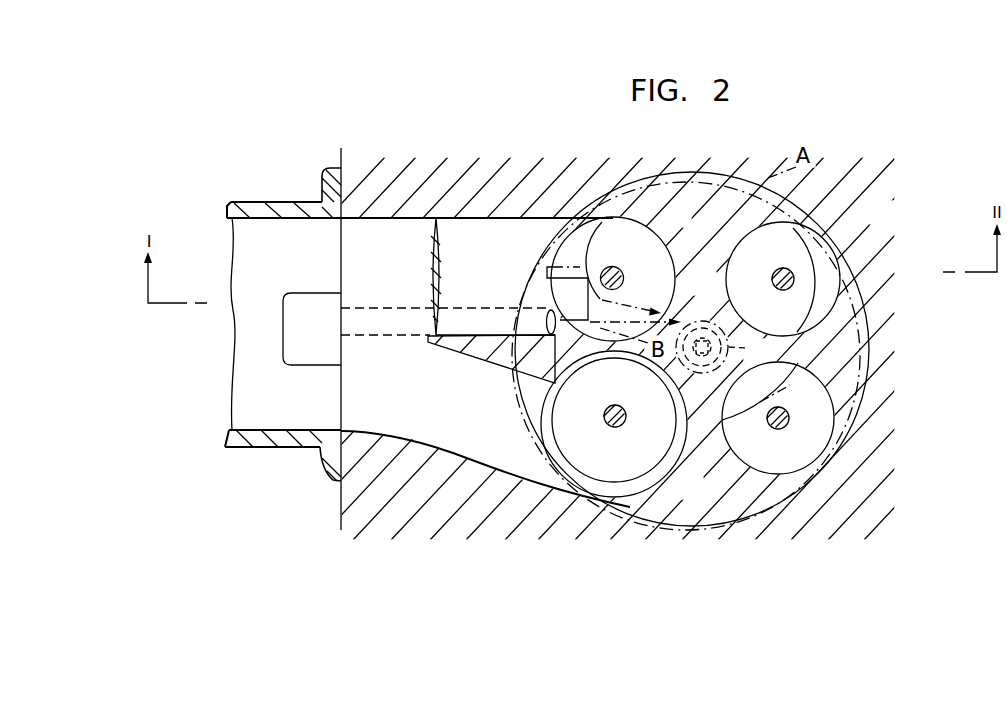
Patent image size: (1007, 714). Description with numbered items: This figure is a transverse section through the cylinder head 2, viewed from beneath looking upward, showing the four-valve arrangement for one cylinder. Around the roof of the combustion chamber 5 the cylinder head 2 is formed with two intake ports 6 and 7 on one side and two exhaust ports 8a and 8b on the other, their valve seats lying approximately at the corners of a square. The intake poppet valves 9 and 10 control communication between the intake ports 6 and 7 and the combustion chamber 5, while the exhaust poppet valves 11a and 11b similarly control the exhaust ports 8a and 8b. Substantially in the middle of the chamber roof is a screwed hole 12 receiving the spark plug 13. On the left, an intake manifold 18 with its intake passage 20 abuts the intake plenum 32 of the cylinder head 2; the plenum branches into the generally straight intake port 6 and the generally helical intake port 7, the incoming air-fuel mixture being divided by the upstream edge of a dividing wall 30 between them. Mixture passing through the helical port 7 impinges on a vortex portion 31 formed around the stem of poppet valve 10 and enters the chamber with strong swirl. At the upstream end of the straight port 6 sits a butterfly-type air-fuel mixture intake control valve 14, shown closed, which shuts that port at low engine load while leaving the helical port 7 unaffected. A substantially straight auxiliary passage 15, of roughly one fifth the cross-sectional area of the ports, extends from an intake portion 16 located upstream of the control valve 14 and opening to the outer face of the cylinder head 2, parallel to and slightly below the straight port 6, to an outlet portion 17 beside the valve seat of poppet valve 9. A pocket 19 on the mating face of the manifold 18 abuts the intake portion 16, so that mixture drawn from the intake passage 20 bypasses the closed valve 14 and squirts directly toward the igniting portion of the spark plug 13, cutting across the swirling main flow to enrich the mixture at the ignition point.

The cylinder head 2 is at (343, 163).
The combustion chamber 5 is at (872, 375).
The generally straight intake port 6 is at (503, 240).
The generally helical intake port 7 is at (487, 440).
The exhaust port 8a is at (822, 272).
The exhaust port 8b is at (815, 426).
The intake poppet valve 9 is at (616, 268).
The intake poppet valve 10 is at (621, 424).
The exhaust poppet valve 11a is at (785, 268).
The exhaust poppet valve 11b is at (786, 426).
The screwed hole 12 is at (702, 330).
The spark plug 13 is at (750, 351).
The air-fuel mixture intake control valve 14 is at (432, 250).
The substantially straight auxiliary passage 15 is at (396, 318).
The intake portion 16 is at (338, 320).
The outlet portion 17 is at (560, 317).
The intake manifold 18 is at (245, 201).
The pocket 19 is at (304, 336).
The intake passage 20 is at (265, 262).
The dividing wall 30 is at (489, 352).
The vortex portion 31 is at (667, 425).
The intake plenum 32 is at (335, 442).